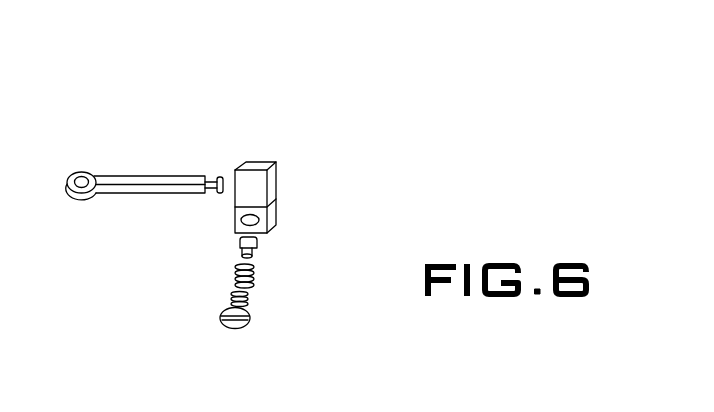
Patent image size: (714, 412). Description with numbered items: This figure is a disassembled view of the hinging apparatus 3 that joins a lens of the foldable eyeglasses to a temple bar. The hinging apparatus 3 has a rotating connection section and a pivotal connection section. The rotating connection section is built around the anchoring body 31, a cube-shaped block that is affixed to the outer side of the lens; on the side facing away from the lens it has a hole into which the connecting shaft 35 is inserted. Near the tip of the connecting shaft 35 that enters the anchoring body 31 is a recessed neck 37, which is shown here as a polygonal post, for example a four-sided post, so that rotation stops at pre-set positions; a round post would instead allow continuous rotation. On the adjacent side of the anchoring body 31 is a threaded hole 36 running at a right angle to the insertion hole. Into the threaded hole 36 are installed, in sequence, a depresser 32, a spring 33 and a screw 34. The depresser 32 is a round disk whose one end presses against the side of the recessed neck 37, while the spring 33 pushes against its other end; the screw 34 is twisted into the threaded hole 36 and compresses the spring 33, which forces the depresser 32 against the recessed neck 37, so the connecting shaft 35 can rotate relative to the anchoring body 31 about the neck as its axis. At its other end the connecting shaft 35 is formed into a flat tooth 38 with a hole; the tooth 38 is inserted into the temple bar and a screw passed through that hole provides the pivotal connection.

The hinging apparatus 3 is at (395, 102).
The anchoring body 31 is at (258, 180).
The depresser 32 is at (260, 243).
The spring 33 is at (238, 277).
The screw 34 is at (245, 303).
The connecting shaft 35 is at (122, 180).
The threaded hole 36 is at (263, 218).
The recessed neck 37 is at (215, 177).
The flat tooth 38 is at (75, 168).